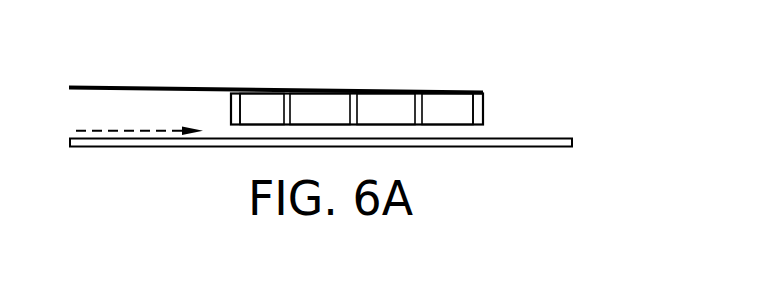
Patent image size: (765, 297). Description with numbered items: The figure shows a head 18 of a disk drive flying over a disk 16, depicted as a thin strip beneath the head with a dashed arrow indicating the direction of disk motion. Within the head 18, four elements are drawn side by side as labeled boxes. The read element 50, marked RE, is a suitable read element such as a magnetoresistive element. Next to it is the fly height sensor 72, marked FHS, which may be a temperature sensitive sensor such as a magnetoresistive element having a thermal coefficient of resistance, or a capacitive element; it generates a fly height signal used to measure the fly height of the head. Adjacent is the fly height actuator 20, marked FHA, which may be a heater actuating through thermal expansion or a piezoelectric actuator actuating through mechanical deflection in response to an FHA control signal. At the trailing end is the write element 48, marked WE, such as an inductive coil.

The disk 16 is at (537, 126).
The head 18 is at (493, 101).
The fly height actuator 20 is at (398, 96).
The write element 48 is at (470, 96).
The read element 50 is at (282, 97).
The fly height sensor 72 is at (345, 96).